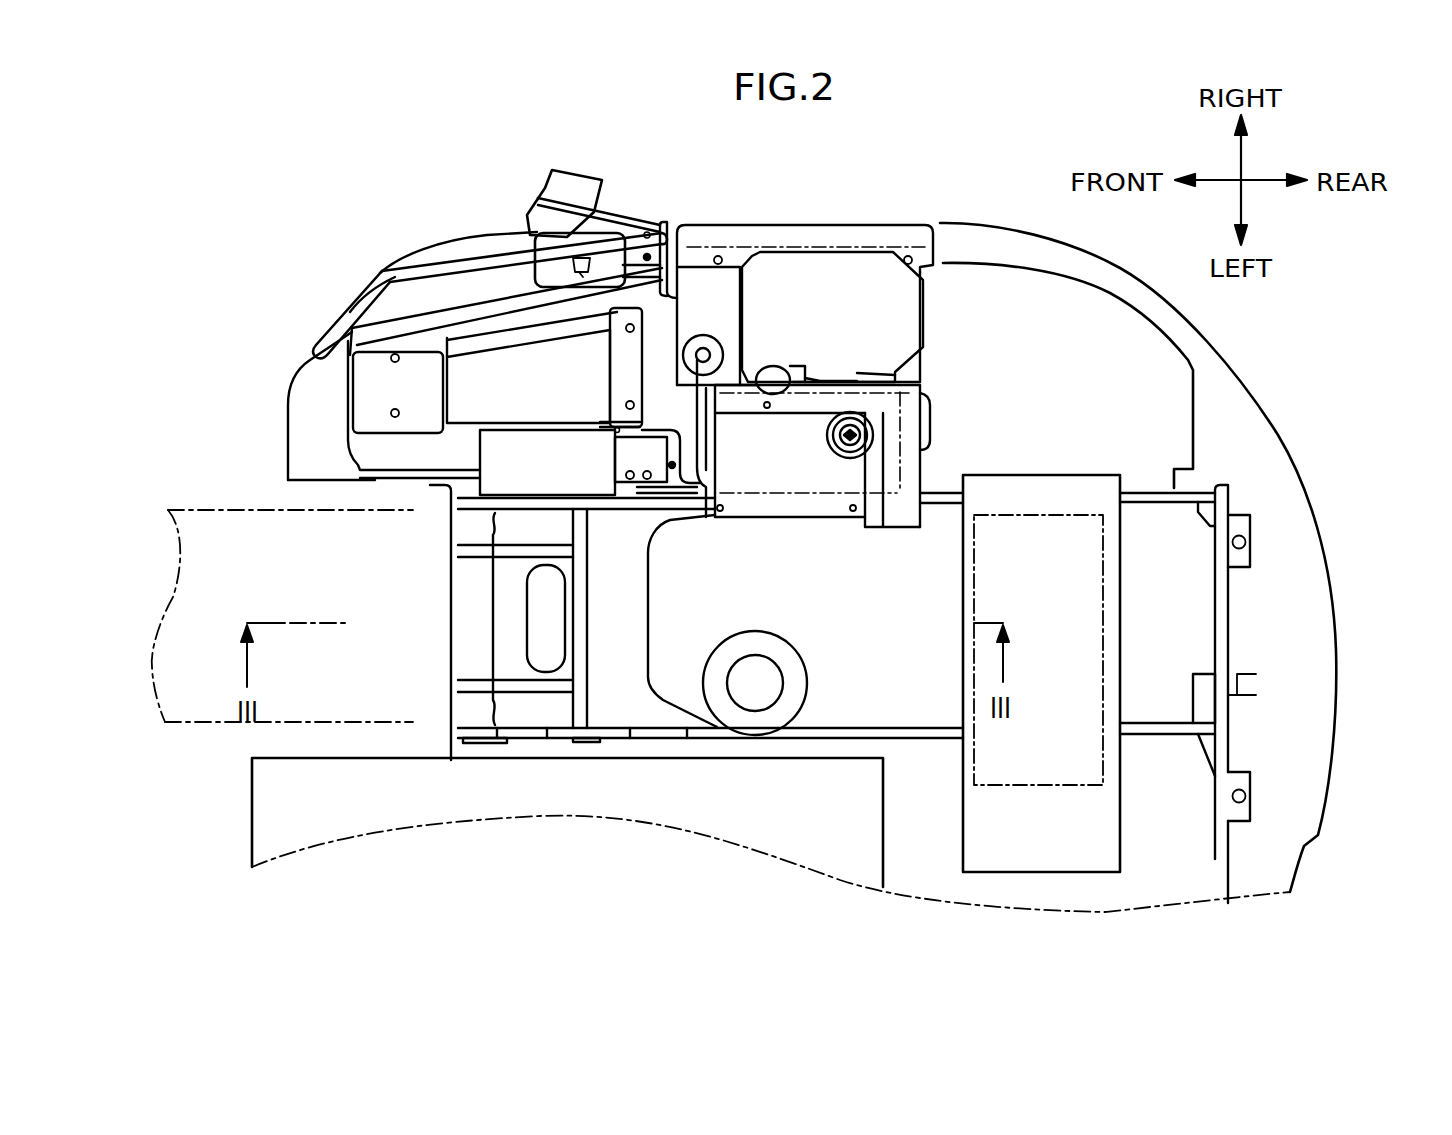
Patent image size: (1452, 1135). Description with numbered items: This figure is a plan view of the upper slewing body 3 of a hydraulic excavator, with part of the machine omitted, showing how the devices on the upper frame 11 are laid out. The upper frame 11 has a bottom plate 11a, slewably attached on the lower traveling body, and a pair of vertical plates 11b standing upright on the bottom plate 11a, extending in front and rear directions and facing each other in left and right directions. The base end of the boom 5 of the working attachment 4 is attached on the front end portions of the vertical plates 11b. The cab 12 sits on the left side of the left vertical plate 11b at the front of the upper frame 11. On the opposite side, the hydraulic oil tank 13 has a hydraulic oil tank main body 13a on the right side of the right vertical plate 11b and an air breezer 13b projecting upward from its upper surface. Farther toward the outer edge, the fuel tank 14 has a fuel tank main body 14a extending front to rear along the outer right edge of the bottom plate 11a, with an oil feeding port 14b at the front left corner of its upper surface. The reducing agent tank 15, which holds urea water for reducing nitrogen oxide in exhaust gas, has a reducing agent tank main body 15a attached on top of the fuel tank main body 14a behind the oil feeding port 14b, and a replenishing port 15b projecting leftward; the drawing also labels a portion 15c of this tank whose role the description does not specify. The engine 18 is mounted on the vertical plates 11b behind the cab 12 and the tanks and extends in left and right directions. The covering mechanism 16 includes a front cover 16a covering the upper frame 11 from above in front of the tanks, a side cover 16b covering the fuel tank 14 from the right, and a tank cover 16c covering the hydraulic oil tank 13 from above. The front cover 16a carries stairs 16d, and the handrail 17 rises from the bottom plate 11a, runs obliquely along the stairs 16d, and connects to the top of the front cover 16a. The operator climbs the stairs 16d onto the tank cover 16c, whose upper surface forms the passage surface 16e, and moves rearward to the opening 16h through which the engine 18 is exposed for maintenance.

The upper slewing body 3 is at (1289, 357).
The working attachment 4 is at (255, 616).
The boom 5 is at (175, 578).
The upper frame 11 is at (949, 690).
The bottom plate 11a is at (1196, 597).
The vertical plates 11b is at (1158, 501).
The cab 12 is at (268, 806).
The hydraulic oil tank 13 is at (953, 459).
The hydraulic oil tank main body 13a is at (892, 459).
The air breezer 13b is at (873, 432).
The fuel tank 14 is at (700, 275).
The fuel tank main body 14a is at (700, 303).
The oil feeding port 14b is at (709, 325).
The reducing agent tank 15 is at (832, 268).
The reducing agent tank main body 15a is at (822, 270).
The replenishing port 15b is at (773, 366).
The tank bottom portion 15c is at (820, 380).
The covering mechanism 16 is at (695, 473).
The front cover 16a is at (380, 310).
The side cover 16b is at (893, 232).
The tank cover 16c is at (797, 503).
The stairs 16d is at (334, 403).
The passage surface 16e is at (811, 468).
The opening 16h is at (1103, 556).
The handrail 17 is at (460, 263).
The engine 18 is at (1120, 634).